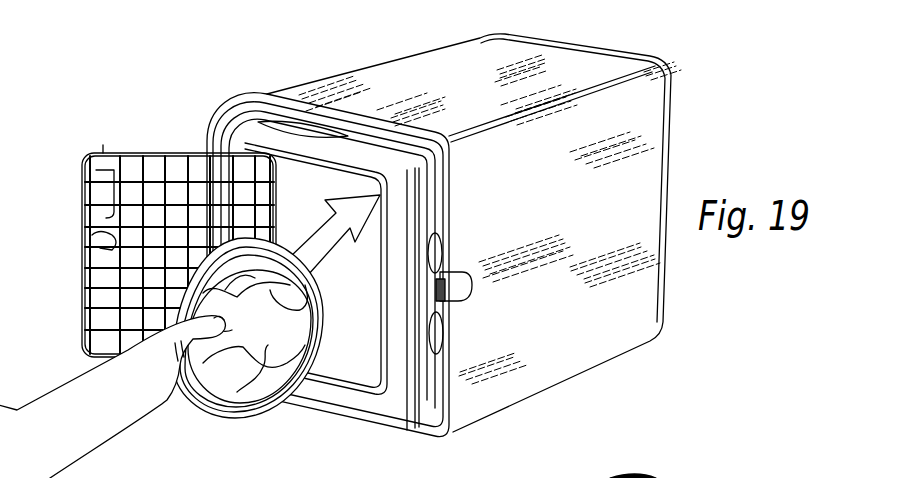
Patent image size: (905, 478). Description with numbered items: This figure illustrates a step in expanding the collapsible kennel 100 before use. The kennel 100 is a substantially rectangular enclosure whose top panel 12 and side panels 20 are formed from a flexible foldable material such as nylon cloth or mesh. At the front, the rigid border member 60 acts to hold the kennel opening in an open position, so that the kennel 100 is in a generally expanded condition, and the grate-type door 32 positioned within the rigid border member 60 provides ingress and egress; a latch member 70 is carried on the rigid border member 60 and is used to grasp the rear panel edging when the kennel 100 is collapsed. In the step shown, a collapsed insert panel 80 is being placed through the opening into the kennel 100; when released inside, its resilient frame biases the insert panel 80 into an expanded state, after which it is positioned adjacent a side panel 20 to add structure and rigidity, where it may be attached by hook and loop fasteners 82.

The collapsible kennel 100 is at (375, 241).
The top panel 12 is at (580, 66).
The side panel 20 is at (630, 181).
The door 32 is at (152, 200).
The rigid border member 60 is at (237, 118).
The latch member 70 is at (457, 292).
The insert panel 80 is at (238, 412).
The hook and loop fastener 82 is at (648, 476).